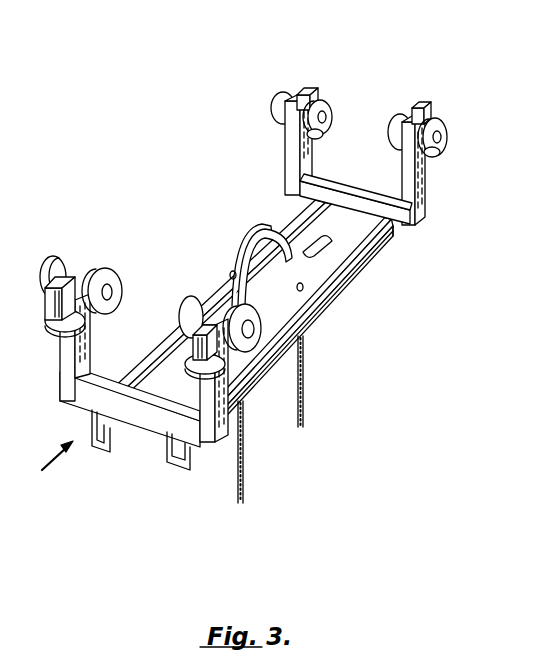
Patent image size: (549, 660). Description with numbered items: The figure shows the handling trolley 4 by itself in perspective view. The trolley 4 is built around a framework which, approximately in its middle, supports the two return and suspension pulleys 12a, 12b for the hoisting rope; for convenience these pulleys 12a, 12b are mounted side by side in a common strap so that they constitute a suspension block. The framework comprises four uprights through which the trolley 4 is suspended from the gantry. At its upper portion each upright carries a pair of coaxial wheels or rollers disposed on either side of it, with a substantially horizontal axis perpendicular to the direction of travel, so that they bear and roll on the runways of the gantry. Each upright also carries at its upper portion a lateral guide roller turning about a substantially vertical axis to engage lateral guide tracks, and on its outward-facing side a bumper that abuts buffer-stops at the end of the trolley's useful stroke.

The trolley 4 is at (54, 468).
The return and suspension pulley 12a is at (256, 232).
The return and suspension pulley 12b is at (285, 260).